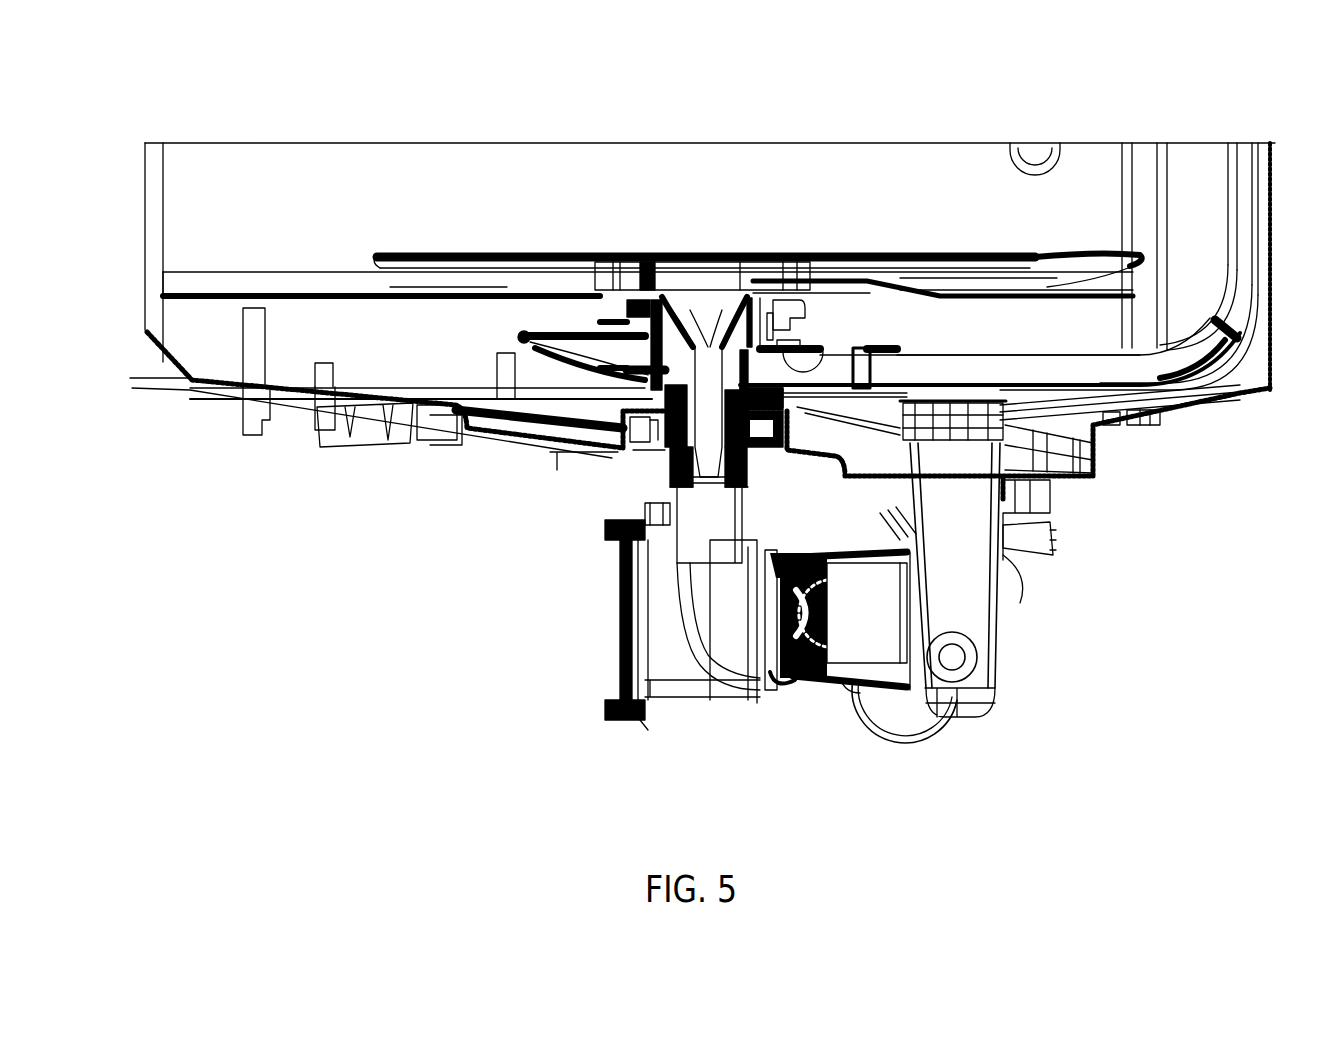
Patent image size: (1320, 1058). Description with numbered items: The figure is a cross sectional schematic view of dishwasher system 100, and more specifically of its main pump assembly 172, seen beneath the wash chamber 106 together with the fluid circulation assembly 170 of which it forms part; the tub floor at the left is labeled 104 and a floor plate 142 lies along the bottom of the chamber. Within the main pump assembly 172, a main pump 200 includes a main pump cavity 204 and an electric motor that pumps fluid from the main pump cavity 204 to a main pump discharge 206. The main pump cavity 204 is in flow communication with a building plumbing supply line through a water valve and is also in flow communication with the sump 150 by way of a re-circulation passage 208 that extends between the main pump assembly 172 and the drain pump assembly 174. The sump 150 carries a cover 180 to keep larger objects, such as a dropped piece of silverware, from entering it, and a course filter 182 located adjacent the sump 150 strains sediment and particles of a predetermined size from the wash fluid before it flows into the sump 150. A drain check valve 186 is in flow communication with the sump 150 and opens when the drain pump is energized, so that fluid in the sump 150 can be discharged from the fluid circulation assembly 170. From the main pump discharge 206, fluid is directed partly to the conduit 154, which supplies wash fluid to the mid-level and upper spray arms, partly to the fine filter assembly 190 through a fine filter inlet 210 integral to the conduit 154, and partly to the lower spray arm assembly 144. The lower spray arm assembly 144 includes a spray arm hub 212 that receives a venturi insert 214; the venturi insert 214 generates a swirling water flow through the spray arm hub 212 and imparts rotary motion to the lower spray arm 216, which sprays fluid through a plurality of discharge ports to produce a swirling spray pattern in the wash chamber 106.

The dishwasher system 100 is at (398, 78).
The wash chamber 106 is at (266, 176).
The sump floor 104 is at (212, 390).
The floor plate 142 is at (467, 430).
The lower spray arm assembly 144 is at (837, 242).
The fine filter assembly 190 is at (560, 365).
The spray arm hub 212 is at (660, 358).
The venturi insert 214 is at (695, 347).
The lower spray arm 216 is at (752, 300).
The fine filter inlet 210 is at (822, 350).
The conduit 154 is at (1003, 365).
The cover 180 is at (990, 440).
The course filter 182 is at (745, 462).
The sump 150 is at (1020, 613).
The drain check valve 186 is at (955, 658).
The drain pump assembly 174 is at (1028, 696).
The main pump assembly 172 is at (462, 606).
The main pump 200 is at (605, 722).
The main pump discharge 206 is at (697, 543).
The main pump cavity 204 is at (727, 652).
The re-circulation passage 208 is at (860, 627).
The fluid circulation assembly 170 is at (643, 818).